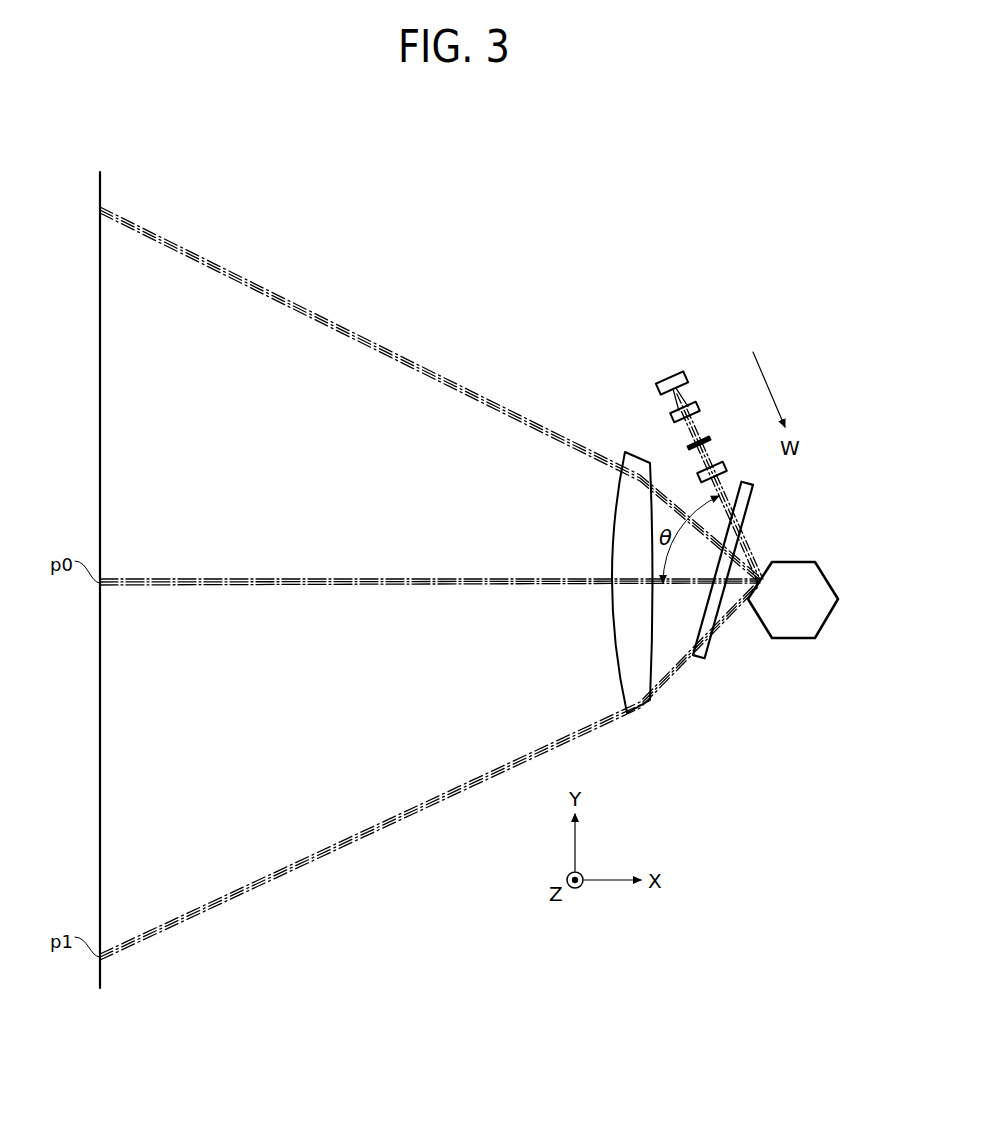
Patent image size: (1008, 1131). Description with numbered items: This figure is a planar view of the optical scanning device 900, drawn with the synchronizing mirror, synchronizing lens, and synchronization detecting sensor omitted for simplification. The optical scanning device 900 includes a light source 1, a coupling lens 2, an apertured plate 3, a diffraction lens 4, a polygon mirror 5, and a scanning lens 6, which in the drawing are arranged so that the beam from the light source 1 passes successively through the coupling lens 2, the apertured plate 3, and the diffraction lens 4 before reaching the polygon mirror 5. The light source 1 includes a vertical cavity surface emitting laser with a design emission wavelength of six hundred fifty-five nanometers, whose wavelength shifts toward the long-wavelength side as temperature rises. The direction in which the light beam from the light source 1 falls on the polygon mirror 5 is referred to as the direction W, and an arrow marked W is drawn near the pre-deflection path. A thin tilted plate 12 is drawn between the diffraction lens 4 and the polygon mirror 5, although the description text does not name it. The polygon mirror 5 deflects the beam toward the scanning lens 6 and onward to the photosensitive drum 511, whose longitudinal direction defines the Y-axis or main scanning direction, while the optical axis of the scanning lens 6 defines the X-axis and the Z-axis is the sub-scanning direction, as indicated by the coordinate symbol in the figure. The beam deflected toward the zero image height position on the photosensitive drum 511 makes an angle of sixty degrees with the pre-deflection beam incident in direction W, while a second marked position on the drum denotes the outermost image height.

The photosensitive drum 511 is at (100, 193).
The optical scanning device 900 is at (603, 247).
The light source 1 is at (683, 381).
The coupling lens 2 is at (697, 405).
The apertured plate 3 is at (711, 437).
The diffraction lens 4 is at (725, 466).
The polygon mirror 5 is at (824, 620).
The scanning lens 6 is at (643, 457).
The cover glass plate 12 is at (753, 500).